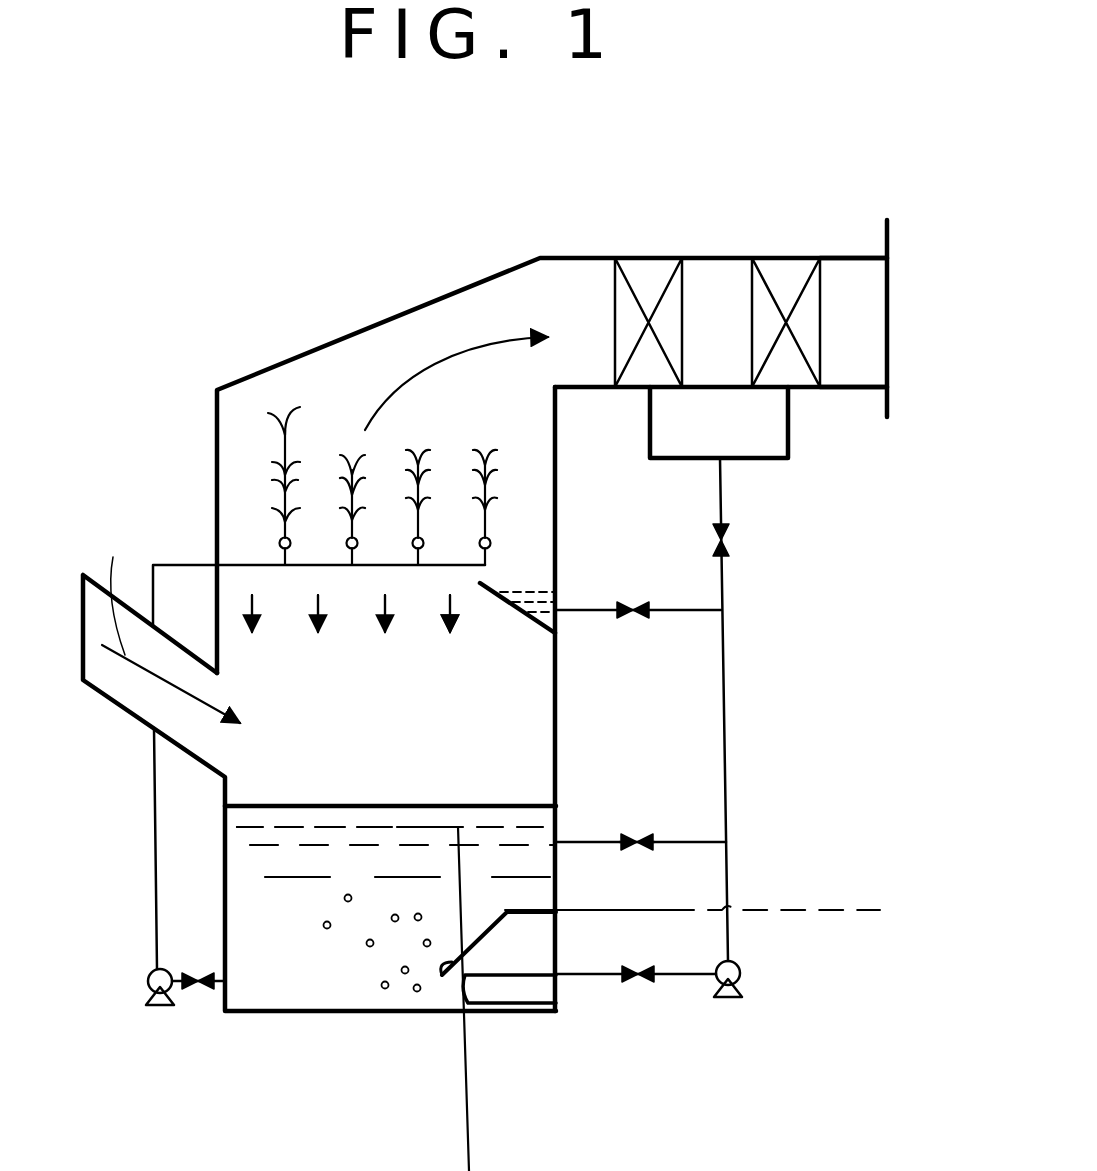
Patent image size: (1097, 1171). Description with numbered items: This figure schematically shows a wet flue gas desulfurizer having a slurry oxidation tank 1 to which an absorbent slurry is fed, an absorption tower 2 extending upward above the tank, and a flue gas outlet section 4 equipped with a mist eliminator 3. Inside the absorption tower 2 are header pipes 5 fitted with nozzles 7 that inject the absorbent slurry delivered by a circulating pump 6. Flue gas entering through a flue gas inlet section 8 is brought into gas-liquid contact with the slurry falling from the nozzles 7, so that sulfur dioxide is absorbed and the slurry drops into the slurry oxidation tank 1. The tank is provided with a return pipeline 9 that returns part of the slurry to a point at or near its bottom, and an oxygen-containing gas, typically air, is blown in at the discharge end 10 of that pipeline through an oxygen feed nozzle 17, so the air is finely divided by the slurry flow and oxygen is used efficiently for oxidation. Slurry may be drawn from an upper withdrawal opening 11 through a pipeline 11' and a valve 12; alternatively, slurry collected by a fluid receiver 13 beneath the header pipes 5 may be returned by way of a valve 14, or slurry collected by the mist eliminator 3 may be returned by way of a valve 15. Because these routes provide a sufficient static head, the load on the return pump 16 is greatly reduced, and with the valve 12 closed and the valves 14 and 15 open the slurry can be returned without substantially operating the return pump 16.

The slurry oxidation tank 1 is at (272, 935).
The absorption tower 2 is at (317, 533).
The mist eliminator 3 is at (772, 268).
The flue gas outlet section 4 is at (850, 278).
The header pipes 5 is at (245, 565).
The circulating pump 6 is at (155, 1005).
The nozzles 7 is at (491, 543).
The flue gas inlet section 8 is at (125, 690).
The return pipeline 9 is at (595, 977).
The discharge end 10 is at (470, 1015).
The upper withdrawal opening 11 is at (588, 795).
The pipeline 11' is at (690, 795).
The valve 12 is at (645, 832).
The fluid receiver 13 is at (510, 600).
The valve 14 is at (635, 620).
The valve 15 is at (735, 540).
The return pump 16 is at (745, 977).
The oxygen feed nozzle 17 is at (435, 978).